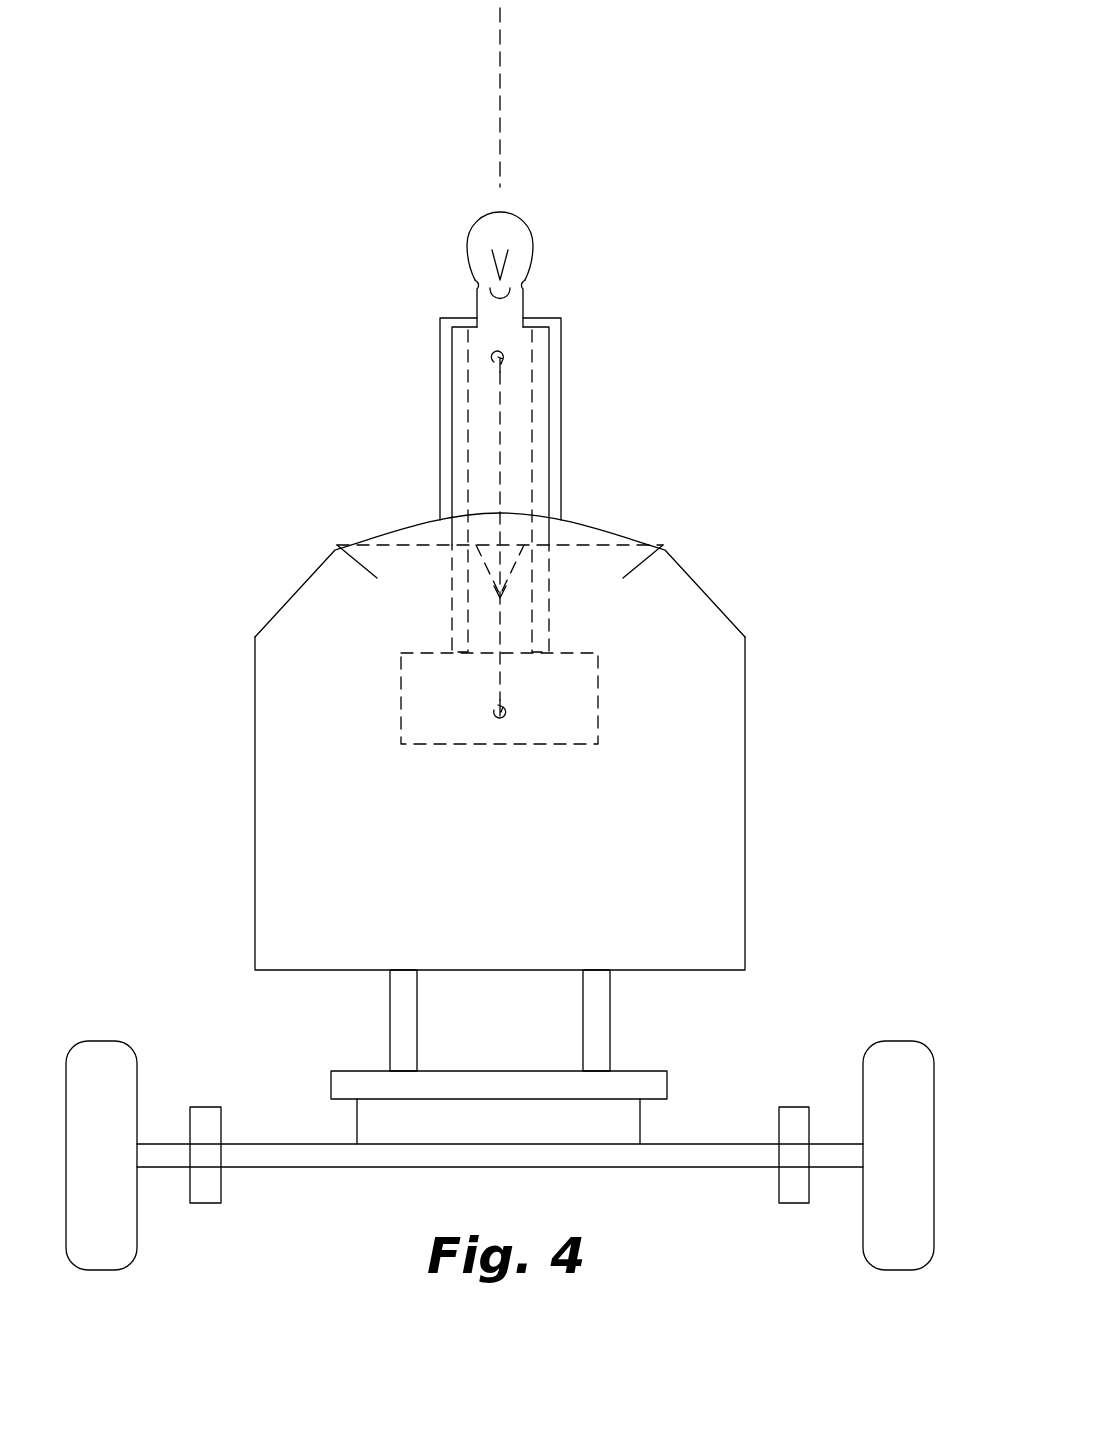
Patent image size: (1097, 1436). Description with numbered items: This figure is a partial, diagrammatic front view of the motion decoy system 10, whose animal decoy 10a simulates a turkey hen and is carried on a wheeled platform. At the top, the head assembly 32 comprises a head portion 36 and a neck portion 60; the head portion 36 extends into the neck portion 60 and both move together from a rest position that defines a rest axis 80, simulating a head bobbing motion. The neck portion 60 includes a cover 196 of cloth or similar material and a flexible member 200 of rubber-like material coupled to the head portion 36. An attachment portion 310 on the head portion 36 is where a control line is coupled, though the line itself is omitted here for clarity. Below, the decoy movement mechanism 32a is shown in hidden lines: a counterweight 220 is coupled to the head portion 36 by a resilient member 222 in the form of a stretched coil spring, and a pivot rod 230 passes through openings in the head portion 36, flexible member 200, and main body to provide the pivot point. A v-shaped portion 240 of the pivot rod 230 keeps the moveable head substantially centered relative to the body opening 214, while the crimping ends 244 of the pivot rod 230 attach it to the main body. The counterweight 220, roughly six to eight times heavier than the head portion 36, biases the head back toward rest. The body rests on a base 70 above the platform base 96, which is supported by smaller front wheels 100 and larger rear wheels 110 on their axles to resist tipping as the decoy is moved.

The motion decoy system 10 is at (715, 446).
The animal decoy 10a is at (745, 688).
The head assembly 32 is at (648, 352).
The decoy movement mechanism 32a is at (398, 610).
The head portion 36 is at (467, 248).
The neck portion 60 is at (421, 306).
The base 70 is at (660, 1070).
The rest axis 80 is at (500, 66).
The platform base 96 is at (640, 1125).
The front wheels 100 is at (779, 1185).
The rear wheels 110 is at (934, 1095).
The cover 196 is at (561, 365).
The flexible member 200 is at (549, 405).
The body opening 214 is at (420, 507).
The counterweight 220 is at (598, 712).
The resilient member 222 is at (497, 452).
The pivot rod 230 is at (533, 473).
The v-shaped portion 240 is at (504, 592).
The crimping ends 244 is at (337, 545).
The attachment portion 310 is at (508, 298).